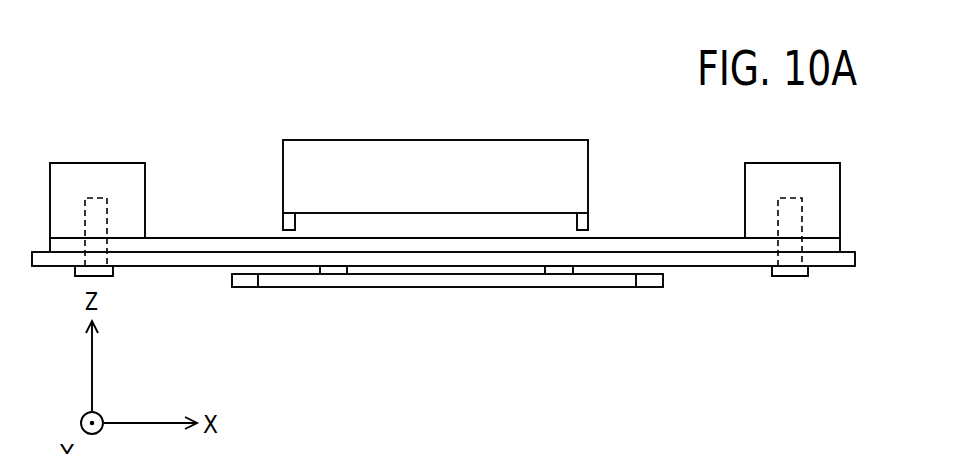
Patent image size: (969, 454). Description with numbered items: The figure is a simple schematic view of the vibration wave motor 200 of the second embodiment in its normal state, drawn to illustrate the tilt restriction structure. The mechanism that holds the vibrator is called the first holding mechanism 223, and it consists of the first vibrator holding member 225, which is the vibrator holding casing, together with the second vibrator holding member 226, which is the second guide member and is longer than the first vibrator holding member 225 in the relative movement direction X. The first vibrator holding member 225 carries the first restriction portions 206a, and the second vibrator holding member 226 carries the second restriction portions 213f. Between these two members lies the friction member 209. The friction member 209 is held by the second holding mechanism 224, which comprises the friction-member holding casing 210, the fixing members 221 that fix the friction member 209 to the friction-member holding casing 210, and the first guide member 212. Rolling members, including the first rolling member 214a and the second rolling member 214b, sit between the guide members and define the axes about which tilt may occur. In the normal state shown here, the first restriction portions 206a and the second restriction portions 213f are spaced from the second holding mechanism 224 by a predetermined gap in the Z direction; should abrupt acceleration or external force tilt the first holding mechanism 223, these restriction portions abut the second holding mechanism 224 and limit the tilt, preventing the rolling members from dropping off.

The vibration wave motor 200 is at (100, 57).
The first holding mechanism 223 is at (200, 42).
The first vibrator holding member 225 is at (313, 140).
The second vibrator holding member 226 is at (268, 287).
The first restriction portion 206a is at (295, 222).
The second restriction portion 213f is at (243, 287).
The first rolling member 214a is at (335, 268).
The second rolling member 214b is at (560, 268).
The second holding mechanism 224 is at (672, 351).
The first guide member 212 is at (718, 257).
The friction member 209 is at (676, 243).
The friction-member holding casing 210 is at (817, 226).
The fixing member 221 is at (794, 276).